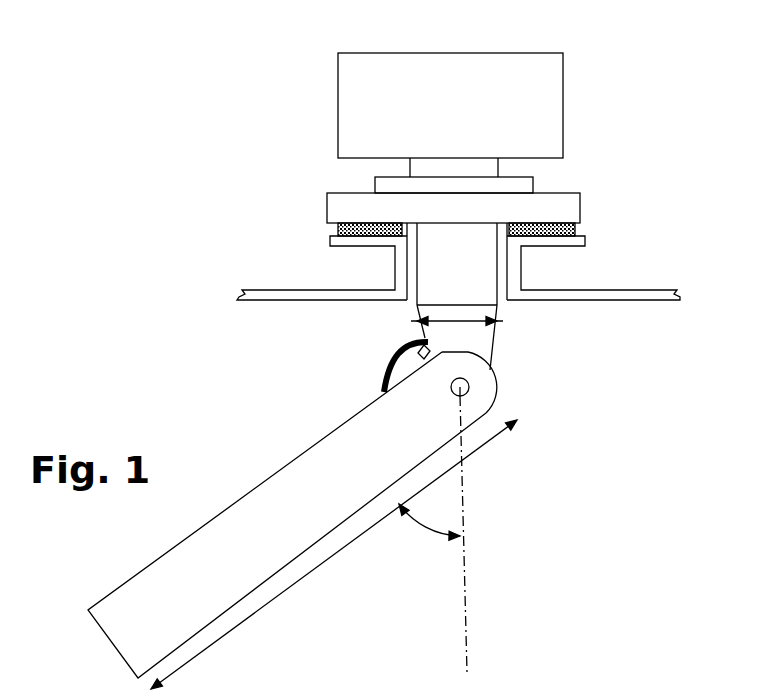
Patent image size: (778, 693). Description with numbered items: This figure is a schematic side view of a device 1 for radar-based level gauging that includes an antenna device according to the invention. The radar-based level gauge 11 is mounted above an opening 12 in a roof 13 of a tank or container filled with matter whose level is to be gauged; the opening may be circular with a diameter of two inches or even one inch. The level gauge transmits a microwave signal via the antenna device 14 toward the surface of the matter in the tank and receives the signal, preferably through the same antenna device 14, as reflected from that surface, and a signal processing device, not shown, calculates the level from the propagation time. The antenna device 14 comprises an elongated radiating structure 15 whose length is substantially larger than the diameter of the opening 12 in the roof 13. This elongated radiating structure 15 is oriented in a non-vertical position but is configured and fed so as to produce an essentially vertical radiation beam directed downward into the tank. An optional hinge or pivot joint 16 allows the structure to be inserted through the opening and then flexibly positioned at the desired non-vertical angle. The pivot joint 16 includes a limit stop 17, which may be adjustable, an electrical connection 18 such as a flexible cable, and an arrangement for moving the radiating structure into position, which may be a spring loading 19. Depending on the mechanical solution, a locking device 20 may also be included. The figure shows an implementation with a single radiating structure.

The device 1 is at (509, 455).
The radar-based level gauge 11 is at (532, 83).
The opening 12 is at (498, 265).
The roof 13 is at (639, 292).
The antenna device 14 is at (488, 458).
The elongated radiating structure 15 is at (322, 492).
The pivot joint 16 is at (462, 388).
The limit stop 17 is at (420, 352).
The electrical connection 18 is at (383, 368).
The spring loading 19 is at (480, 393).
The locking device 20 is at (483, 348).